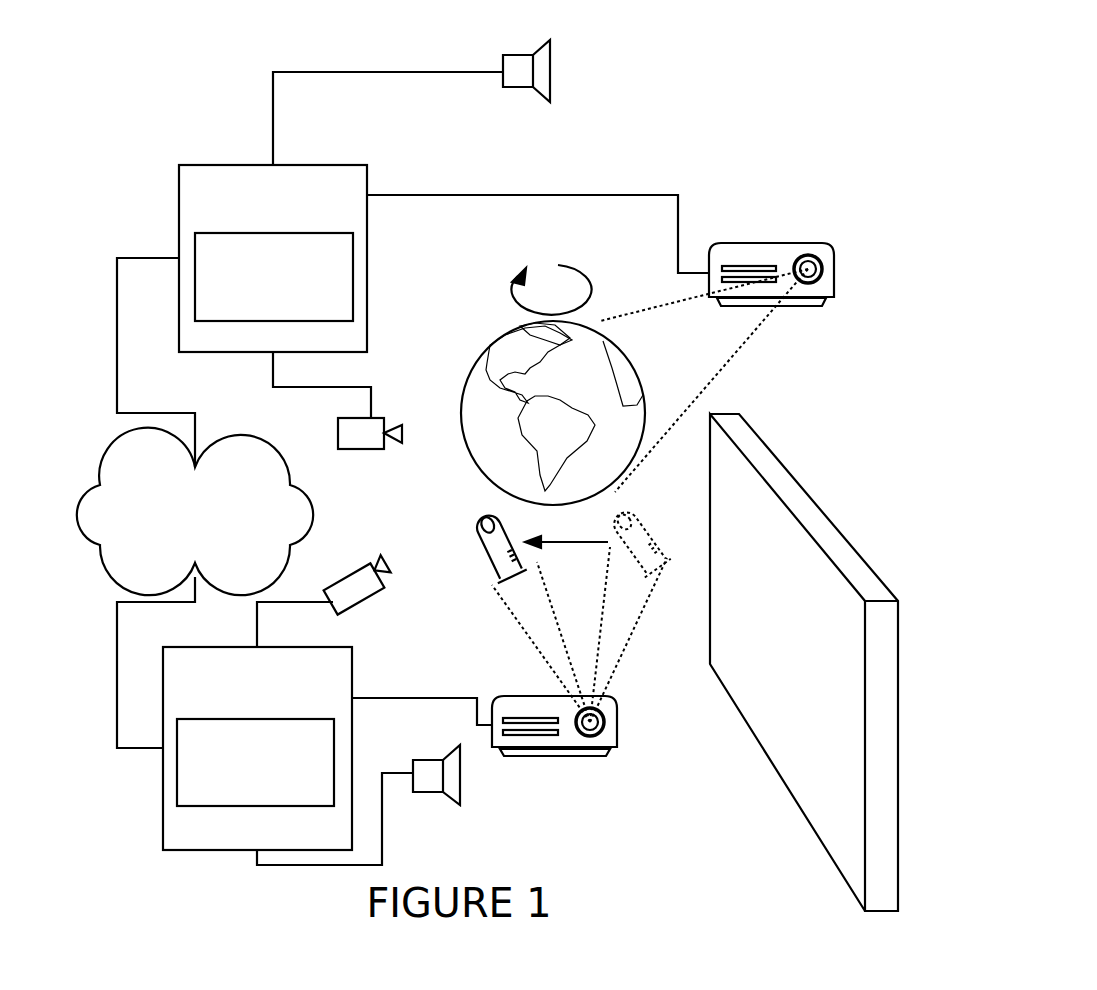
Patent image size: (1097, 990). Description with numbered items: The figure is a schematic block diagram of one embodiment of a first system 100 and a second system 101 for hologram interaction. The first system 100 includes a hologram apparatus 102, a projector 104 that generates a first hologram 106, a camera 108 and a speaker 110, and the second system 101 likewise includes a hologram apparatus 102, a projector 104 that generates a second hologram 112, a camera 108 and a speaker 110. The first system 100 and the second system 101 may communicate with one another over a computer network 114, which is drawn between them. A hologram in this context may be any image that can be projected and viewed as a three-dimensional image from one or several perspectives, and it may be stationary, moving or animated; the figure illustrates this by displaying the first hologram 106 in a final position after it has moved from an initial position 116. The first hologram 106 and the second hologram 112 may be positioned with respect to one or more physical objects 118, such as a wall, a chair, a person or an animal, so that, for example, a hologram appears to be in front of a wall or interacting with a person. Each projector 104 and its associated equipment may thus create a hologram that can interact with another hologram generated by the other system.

The first system 100 is at (257, 748).
The second system 101 is at (273, 258).
The hologram apparatus 102 is at (265, 519).
The projector 104 is at (663, 503).
The first hologram 106 is at (484, 516).
The camera 108 is at (382, 530).
The speaker 110 is at (467, 406).
The second hologram 112 is at (461, 414).
The computer network 114 is at (195, 512).
The initial position 116 is at (645, 543).
The physical object 118 is at (731, 630).